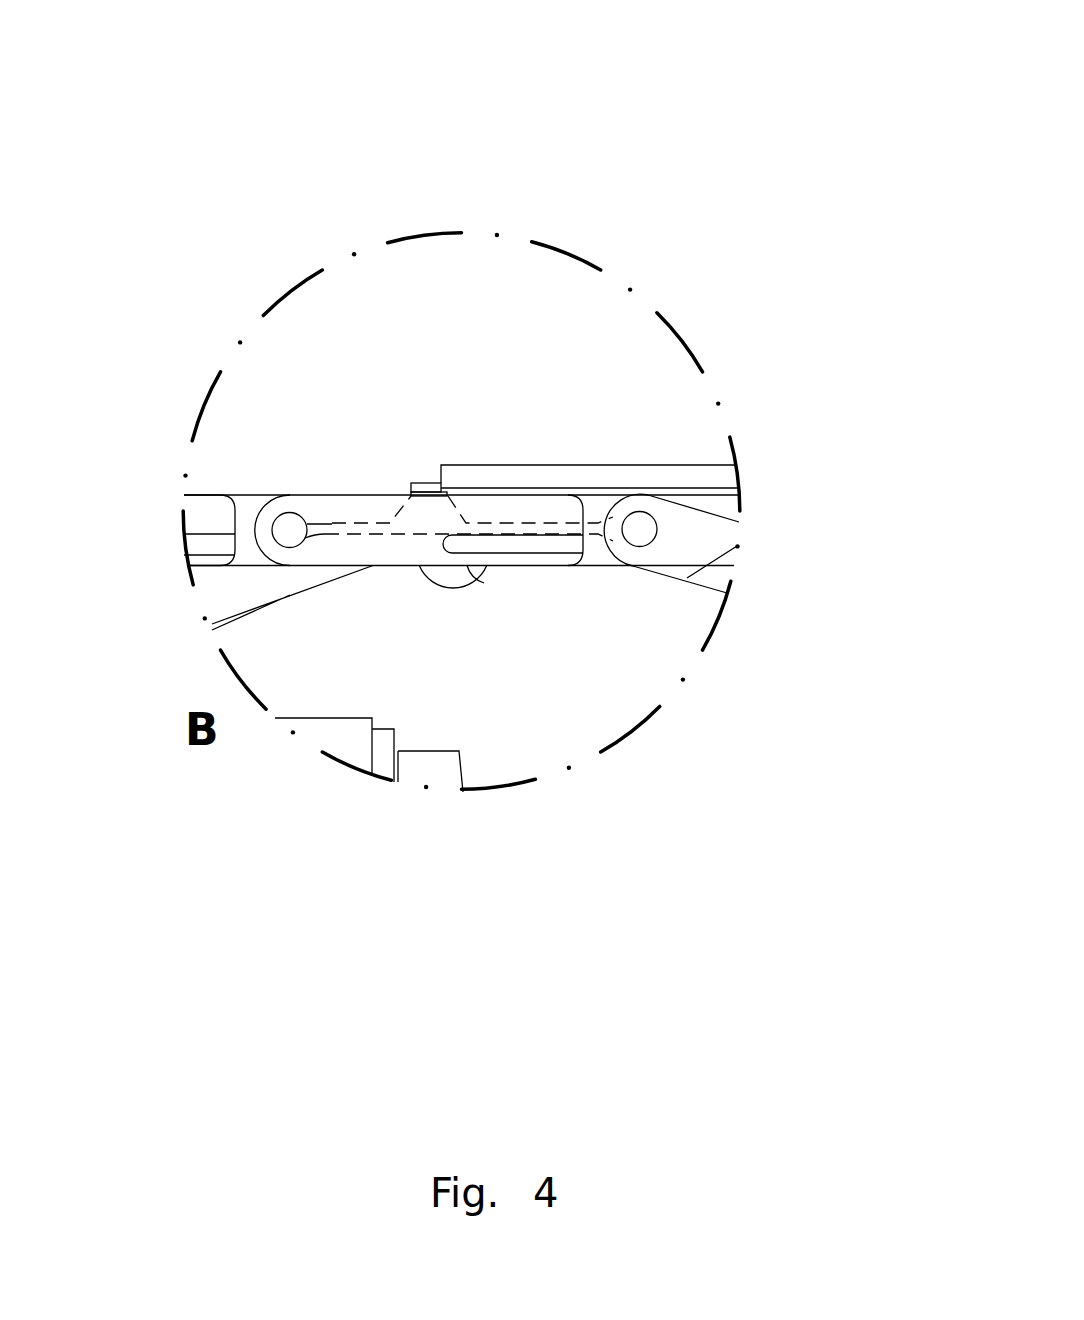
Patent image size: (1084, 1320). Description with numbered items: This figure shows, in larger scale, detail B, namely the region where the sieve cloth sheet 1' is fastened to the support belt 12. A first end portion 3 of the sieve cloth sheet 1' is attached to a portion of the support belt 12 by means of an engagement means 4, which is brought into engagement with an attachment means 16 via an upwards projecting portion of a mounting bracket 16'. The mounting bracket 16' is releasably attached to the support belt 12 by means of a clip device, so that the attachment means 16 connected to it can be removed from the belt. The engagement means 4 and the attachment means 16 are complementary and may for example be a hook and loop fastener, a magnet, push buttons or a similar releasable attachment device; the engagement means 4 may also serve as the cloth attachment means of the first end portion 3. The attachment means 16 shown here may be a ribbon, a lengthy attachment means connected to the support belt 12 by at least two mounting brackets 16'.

The sieve cloth sheet 1' is at (484, 537).
The first end portion 3 is at (565, 424).
The engagement means 4 is at (420, 483).
The support belt 12 is at (713, 515).
The attachment means 16 is at (249, 462).
The mounting bracket 16' is at (540, 688).